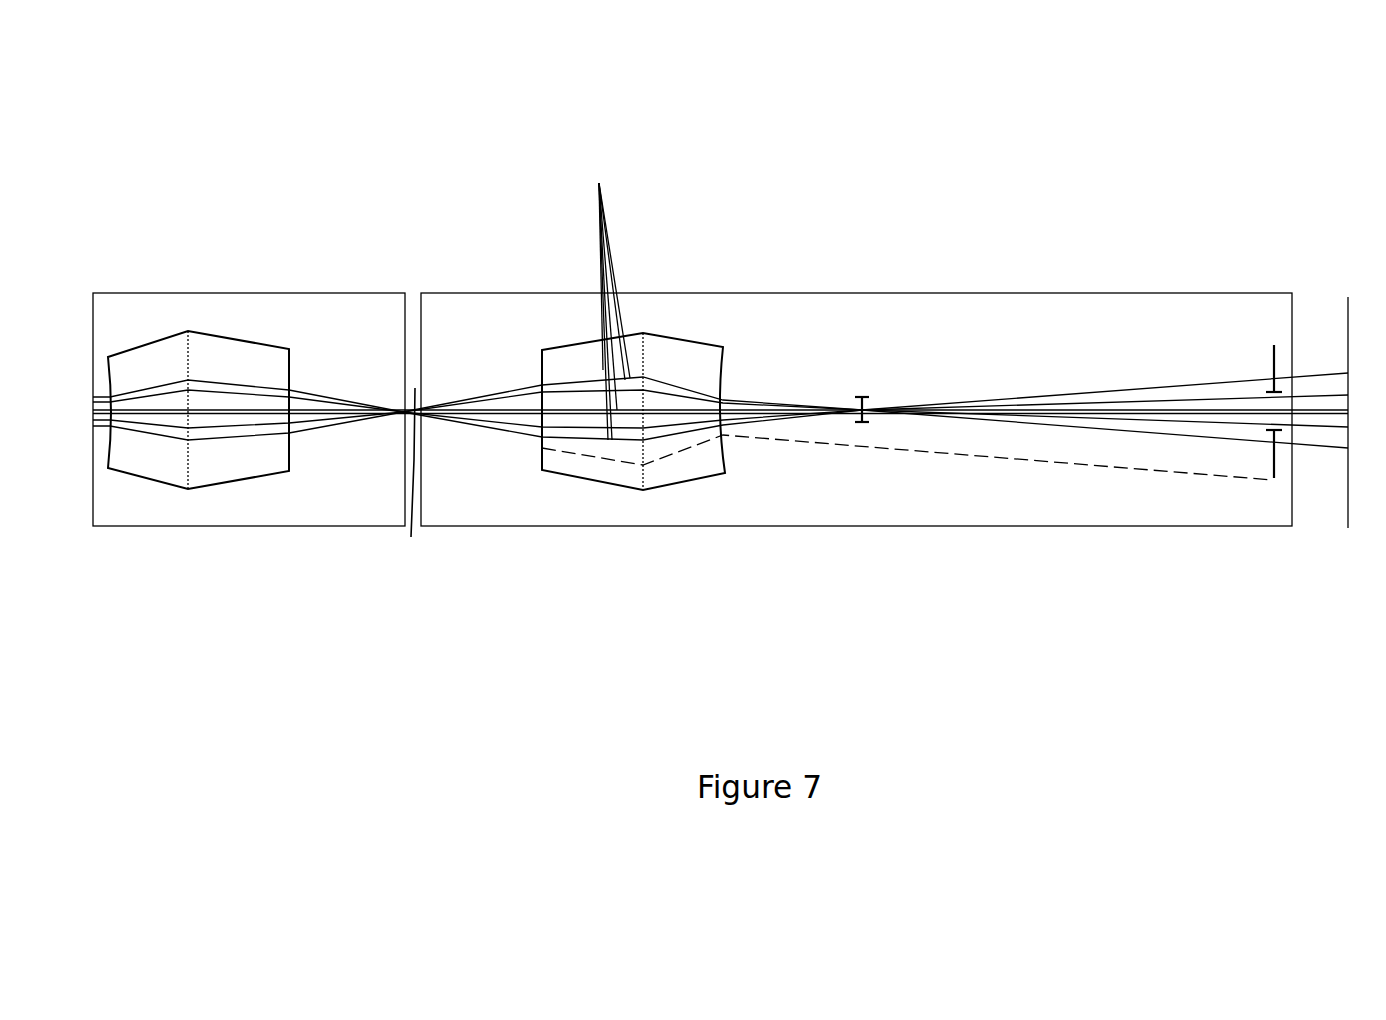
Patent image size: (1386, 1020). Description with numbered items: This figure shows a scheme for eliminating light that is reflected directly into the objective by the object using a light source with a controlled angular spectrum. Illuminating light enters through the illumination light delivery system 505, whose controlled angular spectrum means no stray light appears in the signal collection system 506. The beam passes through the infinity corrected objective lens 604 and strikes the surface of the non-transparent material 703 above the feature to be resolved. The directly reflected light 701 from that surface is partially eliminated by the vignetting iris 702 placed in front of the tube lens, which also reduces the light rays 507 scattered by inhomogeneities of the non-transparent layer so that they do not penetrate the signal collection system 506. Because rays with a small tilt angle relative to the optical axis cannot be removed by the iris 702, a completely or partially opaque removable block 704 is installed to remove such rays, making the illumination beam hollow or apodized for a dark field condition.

The illumination light delivery system 505 is at (262, 526).
The infinity corrected objective lens 604 is at (600, 340).
The non-transparent material 703 is at (589, 514).
The directly reflected light 701 is at (559, 267).
The opaque block 704 is at (862, 397).
The scattered light rays 507 is at (962, 455).
The vignetting iris 702 is at (1270, 355).
The signal collection system 506 is at (915, 526).